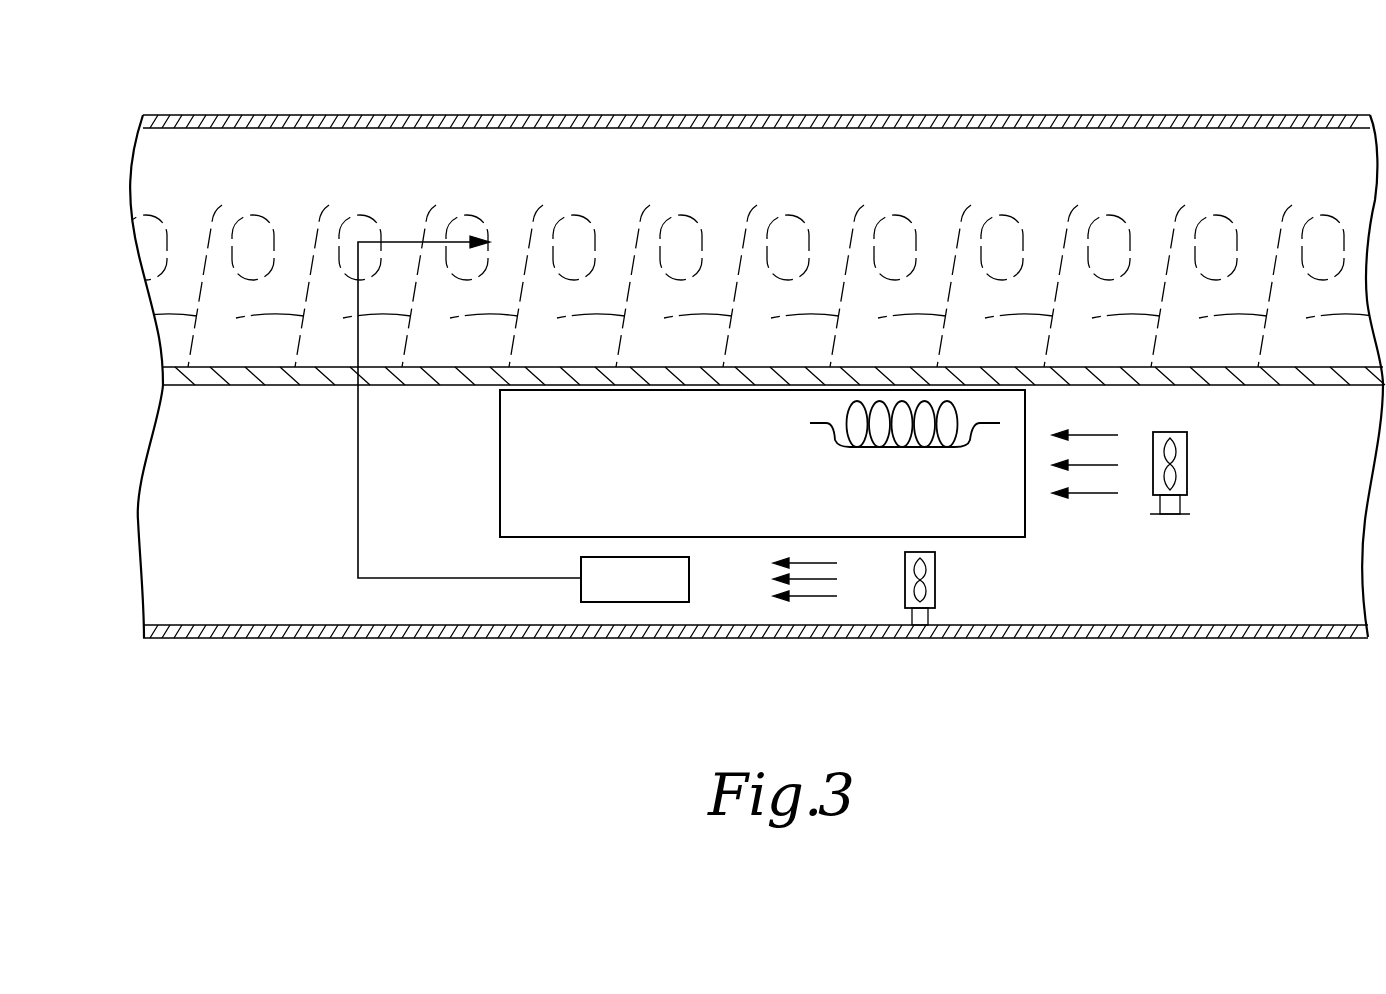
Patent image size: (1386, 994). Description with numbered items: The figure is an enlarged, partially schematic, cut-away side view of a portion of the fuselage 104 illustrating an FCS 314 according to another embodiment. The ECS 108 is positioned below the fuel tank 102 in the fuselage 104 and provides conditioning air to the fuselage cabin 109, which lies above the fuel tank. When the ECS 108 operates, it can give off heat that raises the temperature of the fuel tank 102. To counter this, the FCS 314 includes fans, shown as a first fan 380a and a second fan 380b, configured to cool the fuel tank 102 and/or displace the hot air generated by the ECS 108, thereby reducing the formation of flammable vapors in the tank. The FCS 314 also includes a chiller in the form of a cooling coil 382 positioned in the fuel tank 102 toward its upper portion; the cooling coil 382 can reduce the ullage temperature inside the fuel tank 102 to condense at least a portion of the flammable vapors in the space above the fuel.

The fuselage 104 is at (1122, 115).
The fuselage cabin 109 is at (646, 156).
The fuel tank 102 is at (500, 468).
The cooling coil 382 is at (905, 448).
The first fan 380a is at (937, 580).
The second fan 380b is at (1190, 476).
The ECS 108 is at (698, 600).
The FCS 314 is at (1085, 587).